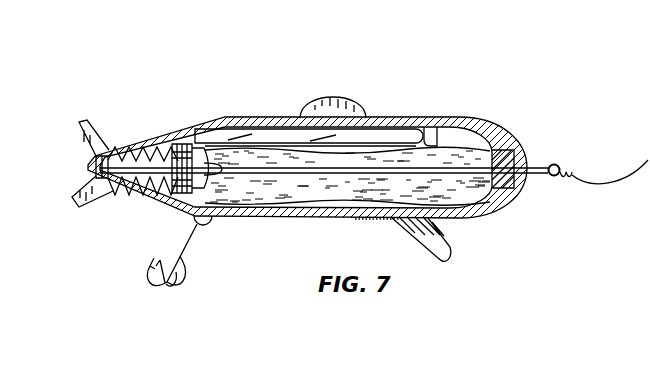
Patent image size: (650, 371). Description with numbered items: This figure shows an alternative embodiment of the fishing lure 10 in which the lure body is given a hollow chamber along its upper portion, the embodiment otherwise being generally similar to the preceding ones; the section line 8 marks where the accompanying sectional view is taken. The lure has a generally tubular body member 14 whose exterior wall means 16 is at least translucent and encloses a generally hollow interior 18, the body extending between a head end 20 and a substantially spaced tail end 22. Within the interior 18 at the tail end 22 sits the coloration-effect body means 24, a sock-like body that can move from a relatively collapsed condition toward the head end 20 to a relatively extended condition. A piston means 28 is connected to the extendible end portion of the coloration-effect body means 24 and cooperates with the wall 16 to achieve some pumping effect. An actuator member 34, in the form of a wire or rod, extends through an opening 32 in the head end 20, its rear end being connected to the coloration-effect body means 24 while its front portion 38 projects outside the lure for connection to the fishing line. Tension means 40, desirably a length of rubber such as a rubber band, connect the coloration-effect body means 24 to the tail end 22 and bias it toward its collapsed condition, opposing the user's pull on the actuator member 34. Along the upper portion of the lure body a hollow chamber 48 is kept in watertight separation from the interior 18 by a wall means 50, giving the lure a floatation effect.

The section line 8- 8 is at (287, 27).
The fishing lure 10 is at (503, 101).
The body member 14 is at (402, 115).
The exterior wall means 16 is at (333, 206).
The hollow interior 18 is at (303, 206).
The head end 20 is at (500, 148).
The tail end 22 is at (128, 124).
The coloration-effect body means 24 is at (150, 140).
The piston means 28 is at (190, 143).
The opening 32 is at (512, 165).
The actuator member 34 is at (558, 164).
The front portion of actuator member 38 is at (561, 171).
The tension means 40 is at (132, 200).
The hollow chamber 48 is at (255, 126).
The wall means 50 is at (272, 127).